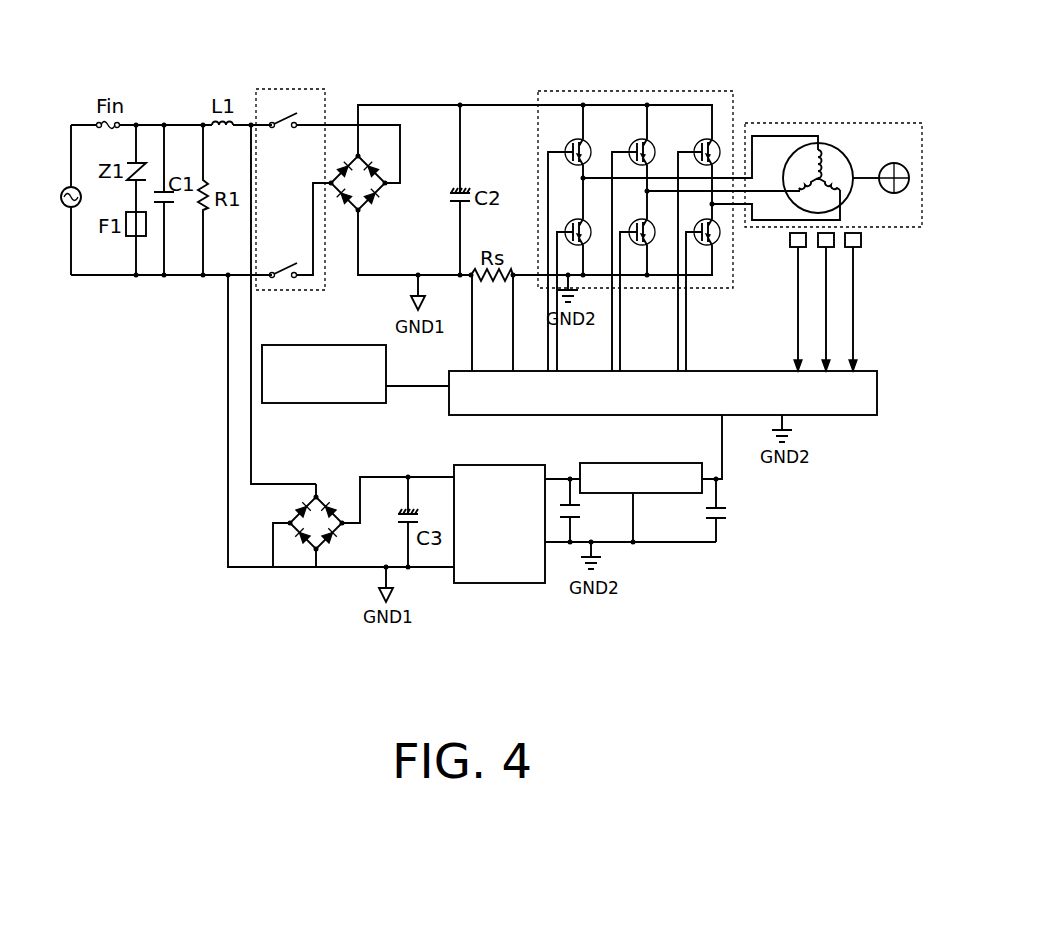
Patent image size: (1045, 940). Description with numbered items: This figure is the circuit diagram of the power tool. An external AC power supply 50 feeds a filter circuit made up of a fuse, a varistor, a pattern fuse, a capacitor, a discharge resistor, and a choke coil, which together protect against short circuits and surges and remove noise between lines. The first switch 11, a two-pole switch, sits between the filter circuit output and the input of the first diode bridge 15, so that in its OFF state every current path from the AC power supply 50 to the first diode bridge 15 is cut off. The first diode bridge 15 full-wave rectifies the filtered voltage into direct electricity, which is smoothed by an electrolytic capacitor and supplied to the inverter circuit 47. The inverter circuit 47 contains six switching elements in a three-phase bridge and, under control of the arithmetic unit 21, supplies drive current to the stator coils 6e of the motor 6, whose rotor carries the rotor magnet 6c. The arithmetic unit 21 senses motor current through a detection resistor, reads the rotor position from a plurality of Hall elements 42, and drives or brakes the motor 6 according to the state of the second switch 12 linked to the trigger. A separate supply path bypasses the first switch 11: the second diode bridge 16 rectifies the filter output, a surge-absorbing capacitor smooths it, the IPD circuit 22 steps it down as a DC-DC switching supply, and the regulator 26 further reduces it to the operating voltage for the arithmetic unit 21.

The AC power supply 50 is at (71, 185).
The first switch 11 is at (306, 88).
The first diode bridge 15 is at (382, 205).
The inverter circuit 47 is at (723, 91).
The motor 6 is at (833, 142).
The stator coils 6e is at (823, 165).
The rotor magnet 6c is at (898, 193).
The Hall elements 42 is at (806, 248).
The arithmetic unit 21 is at (852, 417).
The second switch 12 is at (353, 405).
The second diode bridge 16 is at (298, 552).
The IPD circuit 22 is at (545, 586).
The regulator 26 is at (648, 462).